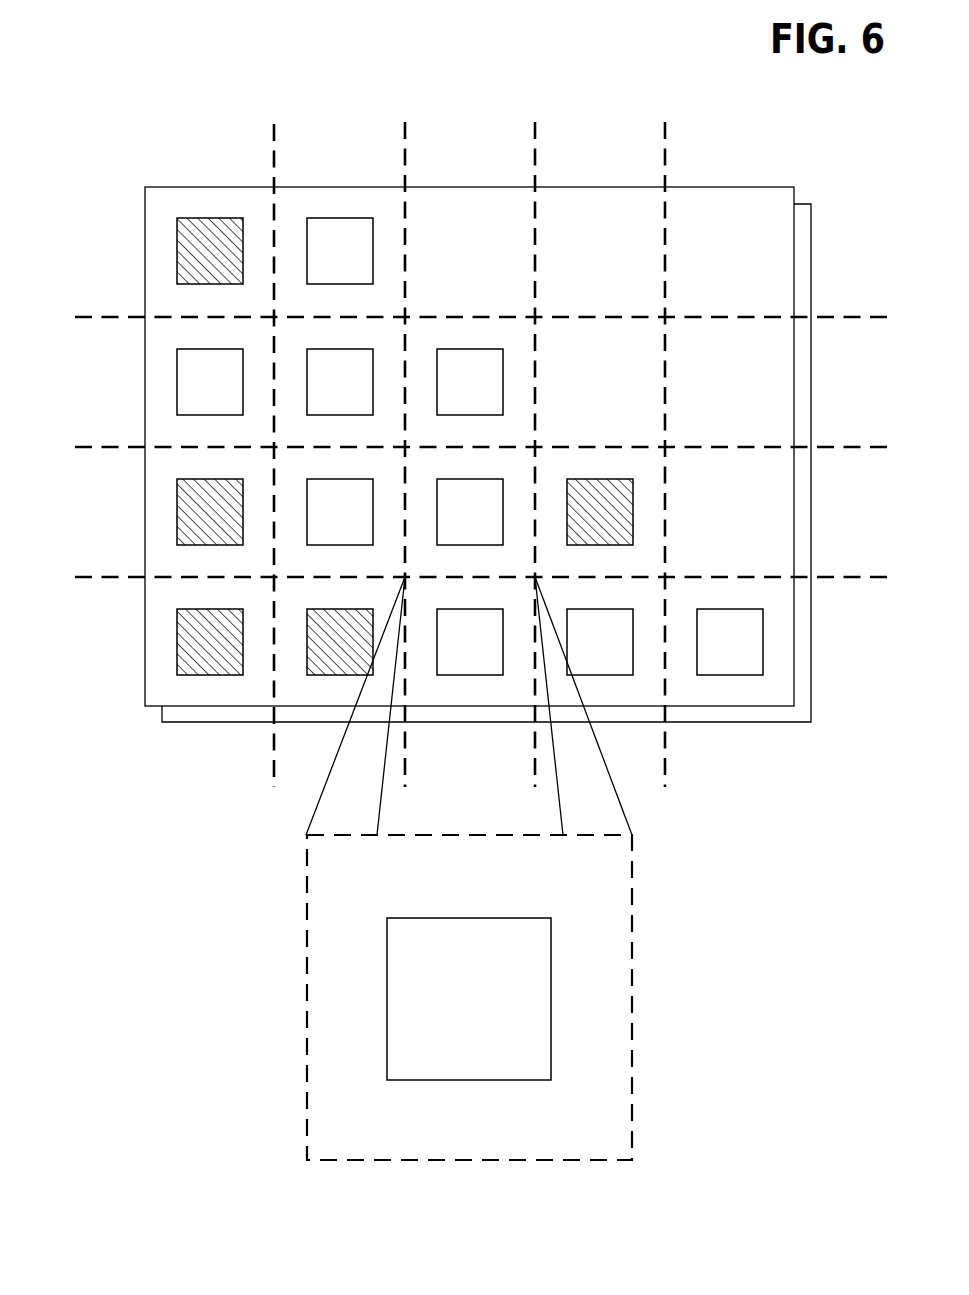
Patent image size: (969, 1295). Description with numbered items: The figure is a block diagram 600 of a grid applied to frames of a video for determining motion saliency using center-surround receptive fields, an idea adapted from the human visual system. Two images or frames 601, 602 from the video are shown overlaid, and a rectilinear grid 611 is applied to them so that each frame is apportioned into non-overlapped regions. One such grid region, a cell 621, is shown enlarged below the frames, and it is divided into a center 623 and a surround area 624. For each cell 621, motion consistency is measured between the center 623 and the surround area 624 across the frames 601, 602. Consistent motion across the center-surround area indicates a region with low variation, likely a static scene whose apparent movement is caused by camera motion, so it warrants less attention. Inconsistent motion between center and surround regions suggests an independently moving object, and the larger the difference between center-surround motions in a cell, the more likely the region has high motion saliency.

The block diagram 600 is at (28, 46).
The rectilinear grid 611 is at (257, 96).
The frame 601 is at (811, 260).
The frame 602 is at (777, 188).
The cell 621 is at (278, 982).
The center 623 is at (451, 1024).
The surround area 624 is at (451, 1136).